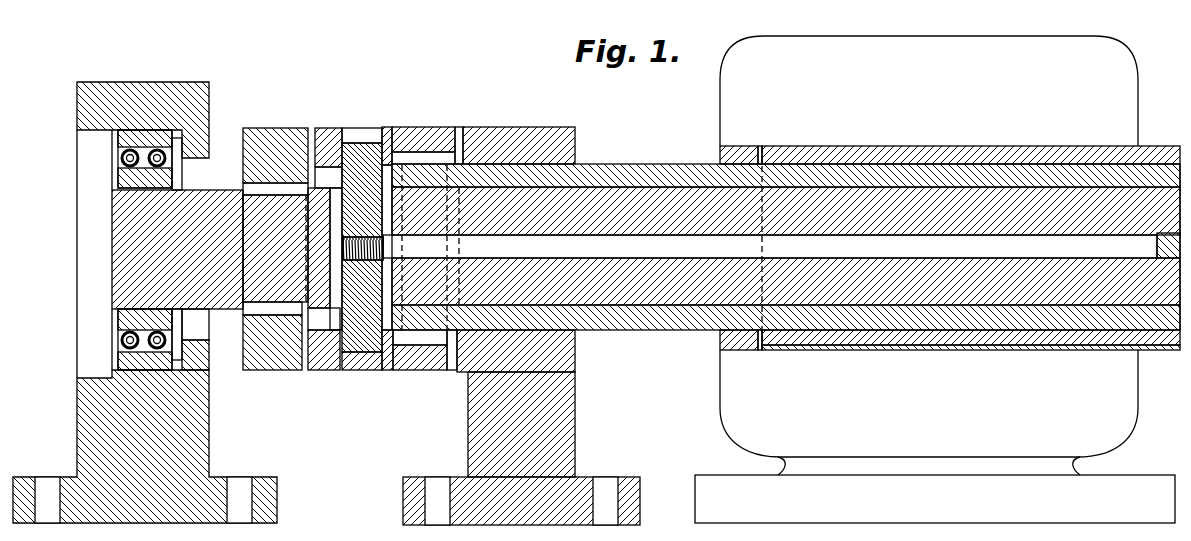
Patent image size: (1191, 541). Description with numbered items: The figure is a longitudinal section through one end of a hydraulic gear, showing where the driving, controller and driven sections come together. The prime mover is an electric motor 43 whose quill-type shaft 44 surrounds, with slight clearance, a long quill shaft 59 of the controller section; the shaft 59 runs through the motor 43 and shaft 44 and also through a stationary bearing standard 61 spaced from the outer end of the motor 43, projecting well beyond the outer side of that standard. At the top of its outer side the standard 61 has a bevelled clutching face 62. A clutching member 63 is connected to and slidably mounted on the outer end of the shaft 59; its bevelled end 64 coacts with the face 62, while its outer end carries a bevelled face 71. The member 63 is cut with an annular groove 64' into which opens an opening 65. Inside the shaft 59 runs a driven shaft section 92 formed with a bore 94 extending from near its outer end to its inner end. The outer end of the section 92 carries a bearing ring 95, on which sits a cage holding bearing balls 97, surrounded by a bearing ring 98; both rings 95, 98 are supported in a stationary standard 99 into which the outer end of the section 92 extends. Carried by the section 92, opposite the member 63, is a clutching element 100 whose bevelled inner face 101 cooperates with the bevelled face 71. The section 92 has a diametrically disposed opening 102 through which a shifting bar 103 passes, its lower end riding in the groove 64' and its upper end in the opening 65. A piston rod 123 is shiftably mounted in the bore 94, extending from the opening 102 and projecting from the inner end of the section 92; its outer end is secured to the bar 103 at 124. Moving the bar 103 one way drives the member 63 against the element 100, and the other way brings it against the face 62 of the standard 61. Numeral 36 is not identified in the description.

The lower bearing 36 is at (118, 333).
The electric motor 43 is at (972, 55).
The shaft 44 is at (1143, 155).
The quill shaft 59 is at (665, 176).
The stationary bearing standard 61 is at (563, 432).
The bevelled clutching face 62 is at (452, 368).
The clutching member 63 is at (393, 364).
The bevelled end 64 is at (431, 229).
The annular groove 64' is at (341, 378).
The opening 65 is at (356, 138).
The bevelled face 71 is at (316, 135).
The driven shaft section 92 is at (893, 286).
The bore 94 is at (748, 260).
The bearing ring 95 is at (118, 183).
The bearing balls 97 is at (118, 165).
The bearing ring 98 is at (150, 140).
The stationary standard 99 is at (192, 408).
The clutching element 100 is at (267, 148).
The bevelled inner face 101 is at (303, 360).
The diametrically disposed opening 102 is at (336, 238).
The shifting bar 103 is at (363, 170).
The piston rod 123 is at (1063, 247).
The securing point 124 is at (345, 237).